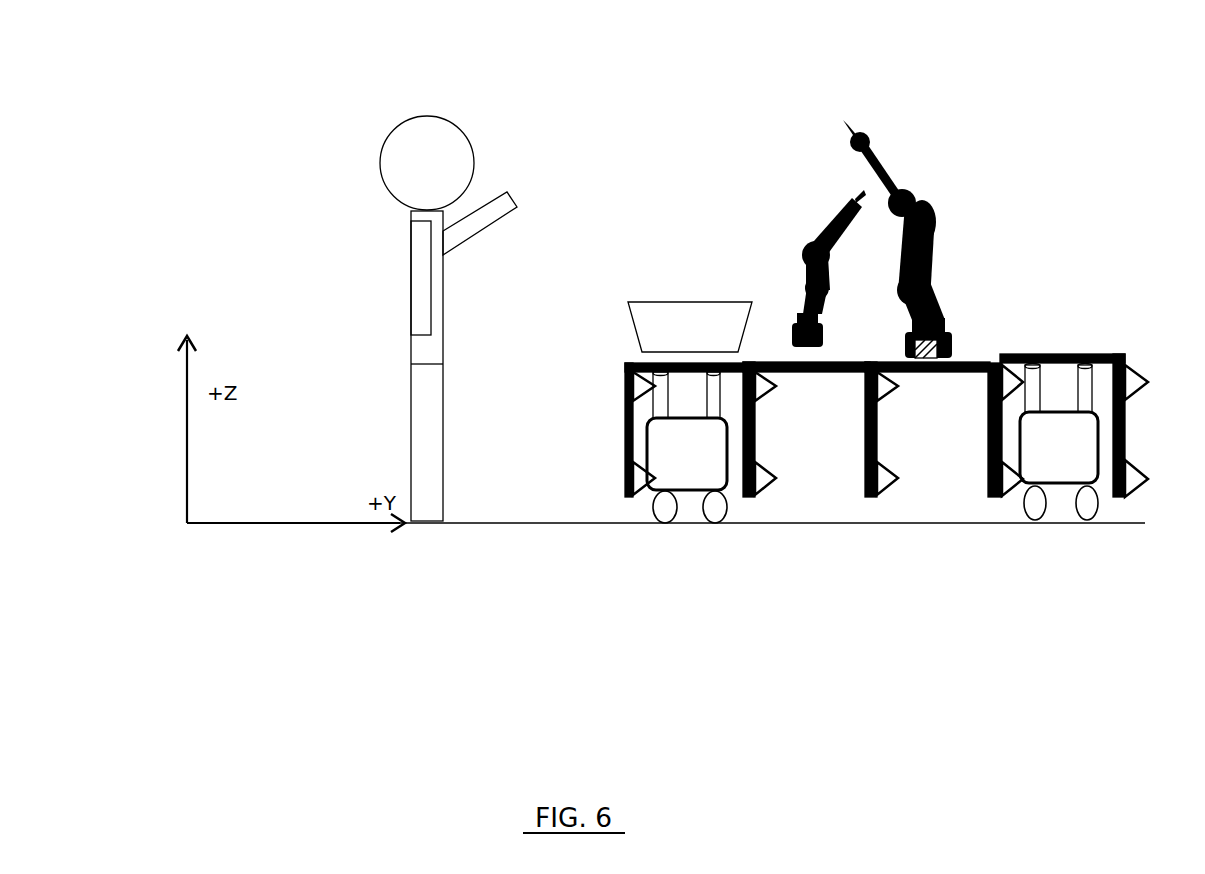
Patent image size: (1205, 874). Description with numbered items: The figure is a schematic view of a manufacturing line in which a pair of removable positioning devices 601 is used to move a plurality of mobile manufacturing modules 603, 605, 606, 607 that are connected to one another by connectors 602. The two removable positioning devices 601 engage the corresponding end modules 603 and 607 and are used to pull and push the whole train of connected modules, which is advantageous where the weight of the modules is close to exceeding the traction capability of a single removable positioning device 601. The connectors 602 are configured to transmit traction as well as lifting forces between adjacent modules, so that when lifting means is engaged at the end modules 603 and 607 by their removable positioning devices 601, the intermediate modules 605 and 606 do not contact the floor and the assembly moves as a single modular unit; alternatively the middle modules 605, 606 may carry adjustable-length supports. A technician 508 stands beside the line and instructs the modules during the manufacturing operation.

The technician 508 is at (465, 118).
The removable positioning device 601 is at (678, 483).
The connector 602 is at (775, 385).
The mobile manufacturing module 603 is at (628, 362).
The mobile manufacturing module 605 is at (788, 360).
The mobile manufacturing module 606 is at (966, 358).
The mobile manufacturing module 607 is at (1098, 355).